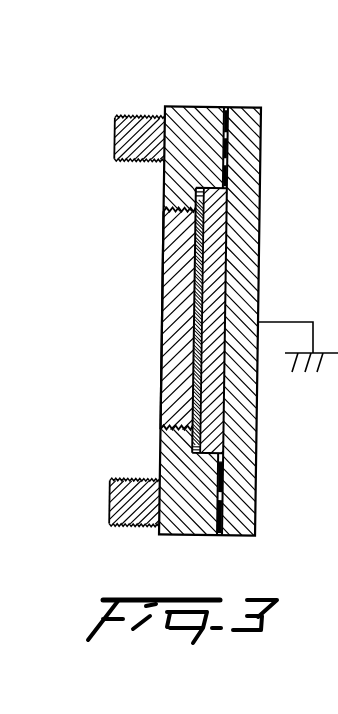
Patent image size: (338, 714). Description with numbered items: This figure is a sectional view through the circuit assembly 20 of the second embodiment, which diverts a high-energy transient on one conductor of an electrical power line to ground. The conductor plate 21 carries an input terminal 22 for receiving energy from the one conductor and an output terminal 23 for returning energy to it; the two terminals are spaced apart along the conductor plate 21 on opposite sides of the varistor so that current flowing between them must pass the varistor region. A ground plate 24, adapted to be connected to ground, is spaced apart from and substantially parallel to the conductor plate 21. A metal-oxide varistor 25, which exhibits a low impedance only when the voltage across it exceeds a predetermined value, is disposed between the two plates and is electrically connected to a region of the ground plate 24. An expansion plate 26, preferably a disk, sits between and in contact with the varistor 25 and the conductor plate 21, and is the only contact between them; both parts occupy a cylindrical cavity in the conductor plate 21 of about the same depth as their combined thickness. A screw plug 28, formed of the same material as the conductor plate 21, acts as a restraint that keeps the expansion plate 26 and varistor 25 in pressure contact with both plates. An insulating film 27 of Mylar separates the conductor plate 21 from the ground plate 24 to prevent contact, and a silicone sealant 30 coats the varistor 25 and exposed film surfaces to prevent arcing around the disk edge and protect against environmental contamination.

The circuit assembly 20 is at (162, 270).
The conductor plate 21 is at (188, 107).
The input terminal 22 is at (140, 117).
The output terminal 23 is at (120, 525).
The ground plate 24 is at (262, 152).
The varistor 25 is at (222, 253).
The expansion plate 26 is at (203, 298).
The insulating film 27 is at (227, 107).
The screw plug 28 is at (160, 340).
The sealant 30 is at (210, 462).